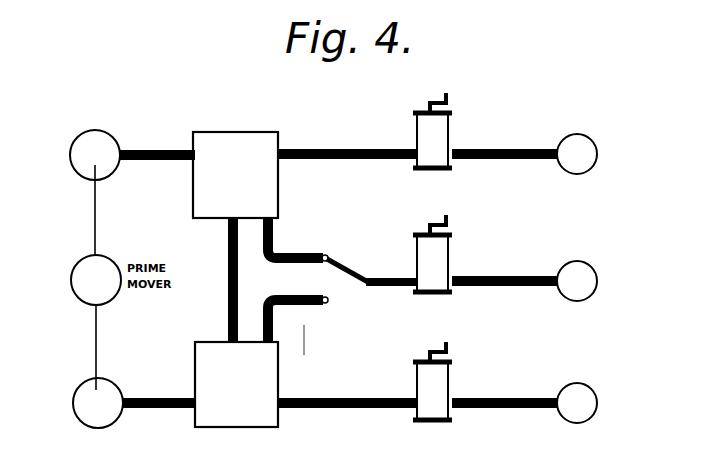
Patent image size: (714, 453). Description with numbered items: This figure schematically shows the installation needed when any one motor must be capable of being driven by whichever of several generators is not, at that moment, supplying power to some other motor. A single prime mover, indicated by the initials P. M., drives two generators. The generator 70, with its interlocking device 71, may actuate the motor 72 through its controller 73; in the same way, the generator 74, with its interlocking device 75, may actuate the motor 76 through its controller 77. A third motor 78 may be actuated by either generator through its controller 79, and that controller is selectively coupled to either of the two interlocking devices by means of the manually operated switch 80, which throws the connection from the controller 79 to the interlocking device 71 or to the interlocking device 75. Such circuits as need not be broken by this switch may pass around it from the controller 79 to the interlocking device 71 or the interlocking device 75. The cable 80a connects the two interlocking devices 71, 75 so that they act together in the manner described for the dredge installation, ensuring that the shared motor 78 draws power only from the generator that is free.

The generator 70 is at (97, 143).
The interlocking device 71 is at (222, 143).
The motor 72 is at (584, 146).
The controller 73 is at (440, 124).
The generator 74 is at (108, 397).
The interlocking device 75 is at (262, 392).
The motor 76 is at (583, 402).
The controller 77 is at (440, 380).
The motor 78 is at (581, 278).
The controller 79 is at (440, 258).
The manually operated switch 80 is at (347, 283).
The cable 80a is at (241, 296).